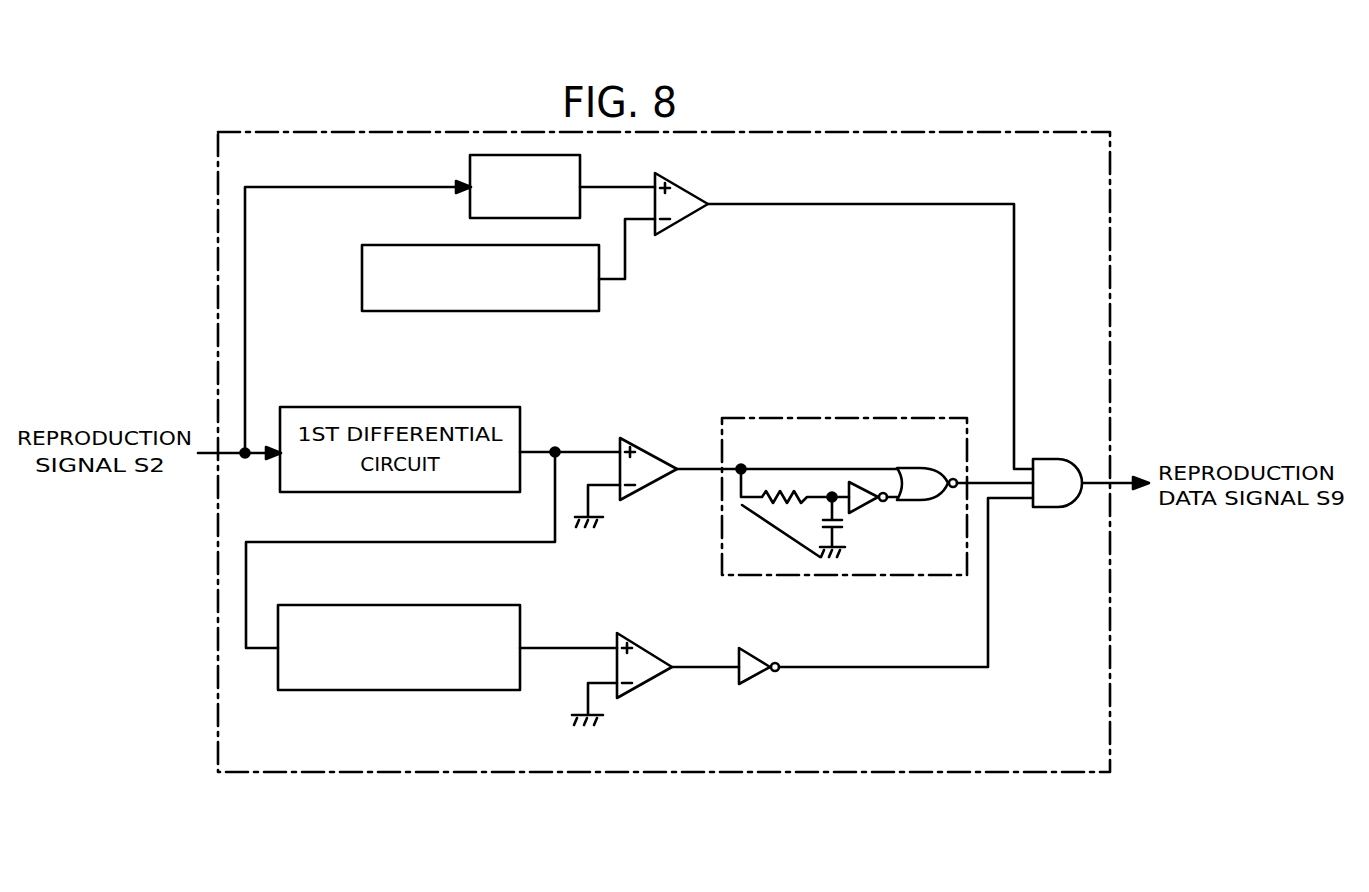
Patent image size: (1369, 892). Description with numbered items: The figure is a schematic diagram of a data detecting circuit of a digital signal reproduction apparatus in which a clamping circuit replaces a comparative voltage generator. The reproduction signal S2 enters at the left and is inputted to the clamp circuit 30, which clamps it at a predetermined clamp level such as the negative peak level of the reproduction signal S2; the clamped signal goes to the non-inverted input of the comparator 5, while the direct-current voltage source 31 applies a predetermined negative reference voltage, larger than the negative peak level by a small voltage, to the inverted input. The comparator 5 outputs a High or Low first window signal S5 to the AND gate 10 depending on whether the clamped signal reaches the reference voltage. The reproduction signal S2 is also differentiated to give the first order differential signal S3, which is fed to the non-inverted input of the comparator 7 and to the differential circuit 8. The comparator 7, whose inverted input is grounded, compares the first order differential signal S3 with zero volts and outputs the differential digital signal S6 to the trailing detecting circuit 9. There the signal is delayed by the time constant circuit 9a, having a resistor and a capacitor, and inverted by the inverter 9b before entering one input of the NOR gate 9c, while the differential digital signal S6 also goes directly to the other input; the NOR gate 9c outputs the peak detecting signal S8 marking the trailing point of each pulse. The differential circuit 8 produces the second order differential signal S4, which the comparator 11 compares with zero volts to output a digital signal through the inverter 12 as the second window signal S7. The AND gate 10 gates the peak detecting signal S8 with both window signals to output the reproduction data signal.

The comparator 5 is at (700, 207).
The comparator 7 is at (641, 448).
The differential circuit 8 is at (435, 605).
The trailing detecting circuit 9 is at (844, 450).
The time constant circuit 9a is at (777, 537).
The inverter 9b is at (866, 506).
The NOR gate 9c is at (926, 501).
The AND gate 10 is at (1057, 462).
The comparator 11 is at (650, 645).
The inverter 12 is at (757, 650).
The clamp circuit 30 is at (581, 171).
The direct-current voltage source 31 is at (378, 312).
The reproduction signal S2 is at (303, 189).
The first order differential signal S3 is at (563, 450).
The second order differential signal S4 is at (575, 647).
The first window signal S5 is at (822, 203).
The differential digital signal S6 is at (700, 468).
The second window signal S7 is at (840, 668).
The peak detecting signal S8 is at (993, 481).